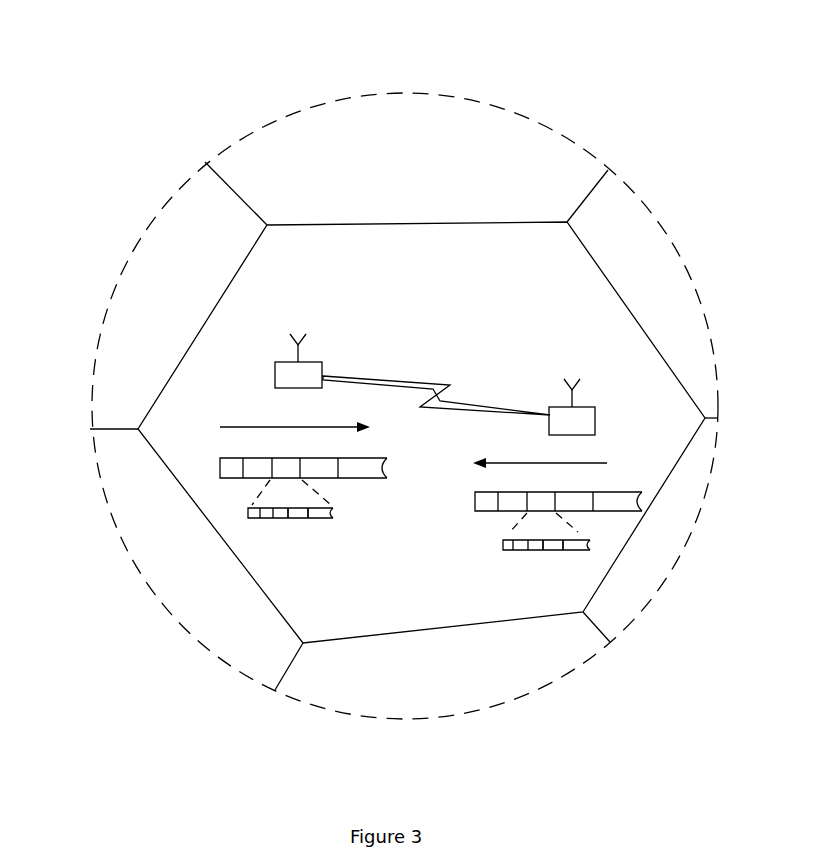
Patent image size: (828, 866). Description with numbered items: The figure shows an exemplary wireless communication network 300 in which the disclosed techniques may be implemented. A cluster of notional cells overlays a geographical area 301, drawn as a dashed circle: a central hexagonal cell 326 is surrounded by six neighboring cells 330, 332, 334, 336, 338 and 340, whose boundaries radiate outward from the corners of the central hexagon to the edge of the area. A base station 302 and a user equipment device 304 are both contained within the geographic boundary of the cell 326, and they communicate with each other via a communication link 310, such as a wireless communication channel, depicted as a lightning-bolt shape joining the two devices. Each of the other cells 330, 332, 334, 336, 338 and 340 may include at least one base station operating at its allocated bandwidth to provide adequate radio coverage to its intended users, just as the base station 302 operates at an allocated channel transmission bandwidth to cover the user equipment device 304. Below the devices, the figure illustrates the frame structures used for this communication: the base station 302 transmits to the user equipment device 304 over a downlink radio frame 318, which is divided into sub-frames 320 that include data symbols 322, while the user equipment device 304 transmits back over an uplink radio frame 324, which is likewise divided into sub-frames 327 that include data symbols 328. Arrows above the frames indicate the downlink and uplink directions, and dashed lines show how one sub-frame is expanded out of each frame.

The wireless communication network 300 is at (356, 50).
The geographical area 301 is at (463, 97).
The base station 302 is at (275, 370).
The user equipment device 304 is at (597, 413).
The communication link 310 is at (433, 377).
The downlink radio frame 318 is at (220, 470).
The sub-frame 320 is at (250, 511).
The data symbols 322 is at (300, 515).
The uplink radio frame 324 is at (618, 490).
The cell 326 is at (285, 303).
The sub-frame 327 is at (505, 546).
The data symbols 328 is at (555, 547).
The cell 330 is at (175, 225).
The cell 332 is at (335, 130).
The cell 334 is at (648, 247).
The cell 336 is at (648, 570).
The cell 338 is at (399, 697).
The cell 340 is at (232, 628).